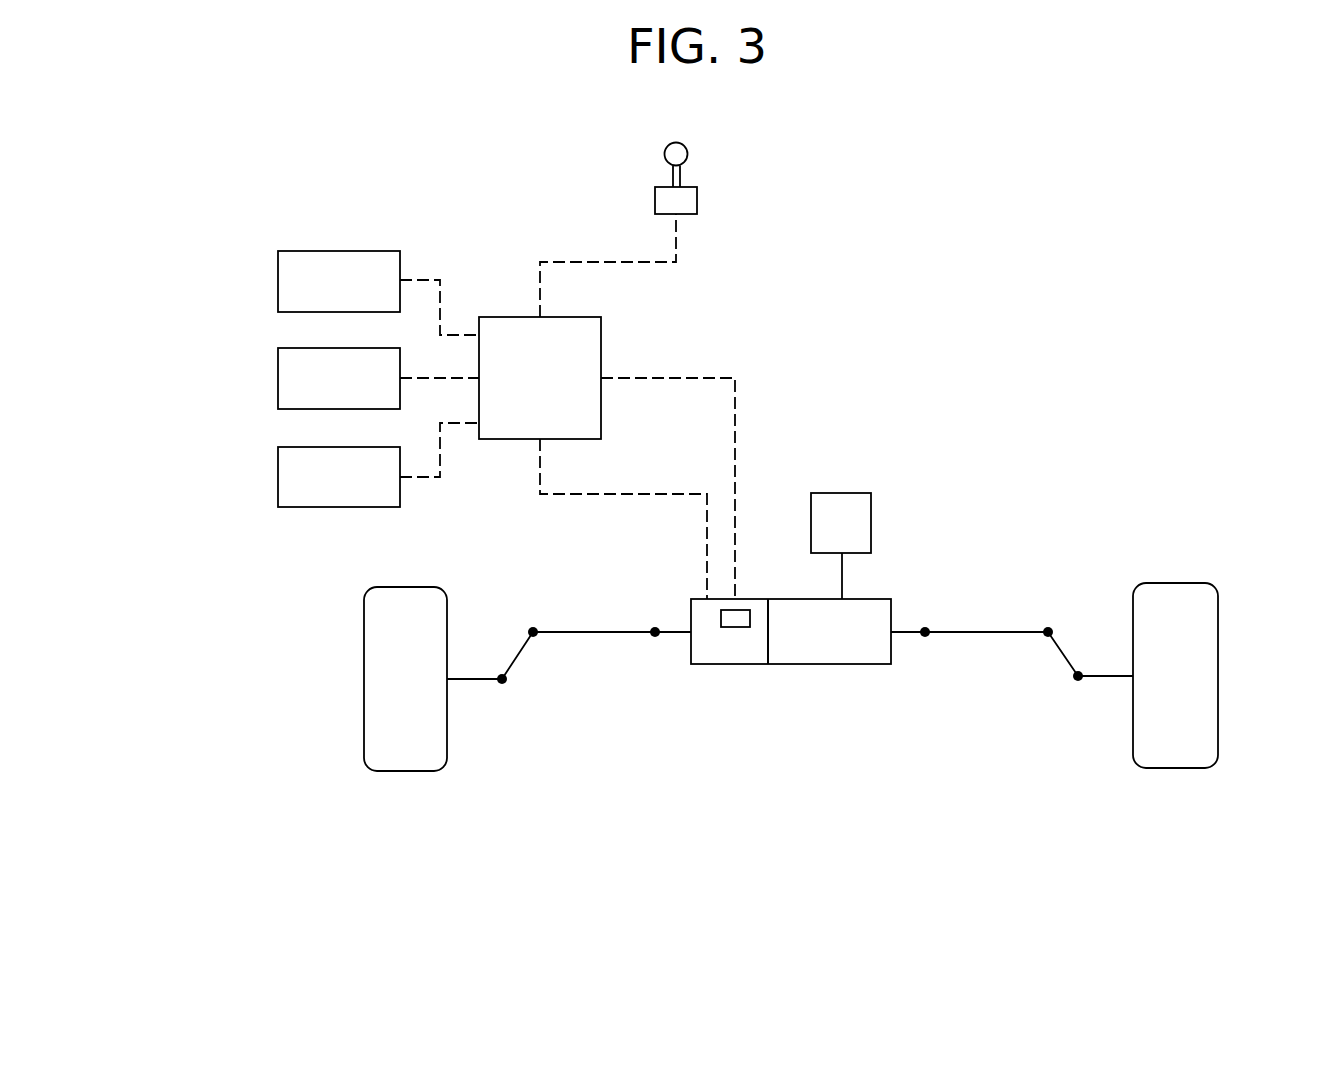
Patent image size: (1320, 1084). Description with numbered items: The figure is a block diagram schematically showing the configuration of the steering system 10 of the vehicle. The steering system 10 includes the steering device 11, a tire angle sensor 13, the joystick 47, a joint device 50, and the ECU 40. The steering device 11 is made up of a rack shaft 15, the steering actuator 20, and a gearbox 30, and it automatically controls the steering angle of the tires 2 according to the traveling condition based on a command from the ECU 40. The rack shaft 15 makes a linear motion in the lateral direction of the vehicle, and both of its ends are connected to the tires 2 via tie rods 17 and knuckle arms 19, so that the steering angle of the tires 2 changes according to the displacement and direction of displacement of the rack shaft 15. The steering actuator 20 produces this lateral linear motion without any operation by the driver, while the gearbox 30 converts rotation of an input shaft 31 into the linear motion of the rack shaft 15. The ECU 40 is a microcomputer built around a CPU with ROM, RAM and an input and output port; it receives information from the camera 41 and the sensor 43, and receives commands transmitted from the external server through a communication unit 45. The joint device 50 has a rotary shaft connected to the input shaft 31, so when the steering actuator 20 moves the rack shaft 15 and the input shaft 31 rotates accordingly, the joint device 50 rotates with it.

The tires 2 is at (403, 771).
The steering system 10 is at (1003, 390).
The steering device 11 is at (811, 648).
The tire angle sensor 13 is at (738, 607).
The rack shaft 15 is at (907, 637).
The tie rods 17 is at (985, 630).
The knuckle arms 19 is at (1063, 655).
The steering actuator 20 is at (731, 666).
The gearbox 30 is at (818, 666).
The input shaft 31 is at (845, 575).
The ECU 40 is at (601, 352).
The camera 41 is at (277, 282).
The sensor 43 is at (277, 380).
The communication unit 45 is at (277, 480).
The joystick 47 is at (697, 198).
The joint device 50 is at (871, 520).